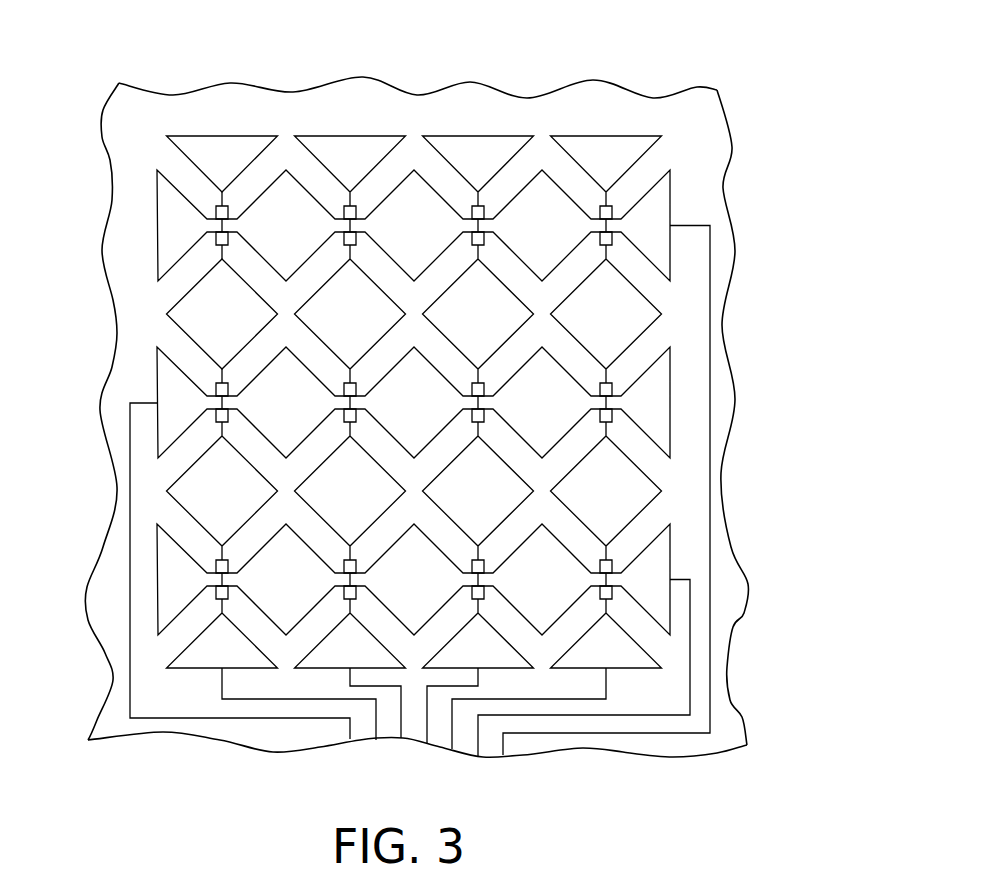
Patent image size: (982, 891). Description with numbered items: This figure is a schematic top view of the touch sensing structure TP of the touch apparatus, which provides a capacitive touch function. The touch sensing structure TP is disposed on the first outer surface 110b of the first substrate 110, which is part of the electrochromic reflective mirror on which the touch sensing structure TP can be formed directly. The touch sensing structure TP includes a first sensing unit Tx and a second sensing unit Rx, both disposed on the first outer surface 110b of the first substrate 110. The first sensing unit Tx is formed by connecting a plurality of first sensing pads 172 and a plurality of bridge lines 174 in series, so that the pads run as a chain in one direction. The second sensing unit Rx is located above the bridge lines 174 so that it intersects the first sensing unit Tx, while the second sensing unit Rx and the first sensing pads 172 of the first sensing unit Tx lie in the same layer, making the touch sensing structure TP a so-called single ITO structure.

The touch sensing structure TP is at (722, 584).
The first substrate 110 is at (728, 110).
The first outer surface 110b is at (670, 123).
The first sensing unit Tx is at (222, 122).
The second sensing unit Rx is at (138, 227).
The first sensing pad 172 is at (207, 322).
The bridge line 174 is at (218, 255).